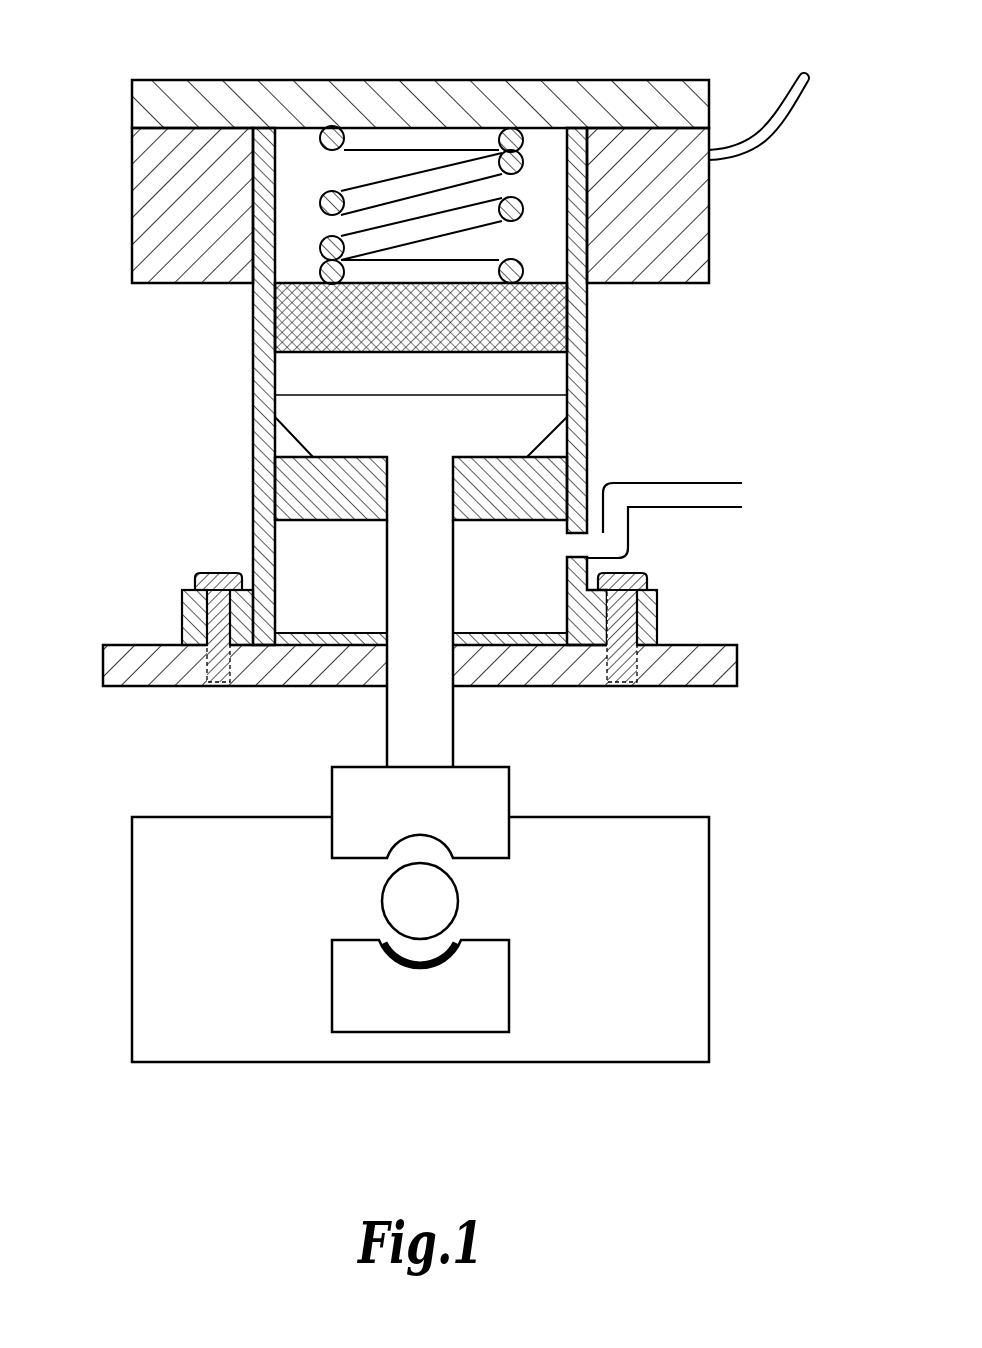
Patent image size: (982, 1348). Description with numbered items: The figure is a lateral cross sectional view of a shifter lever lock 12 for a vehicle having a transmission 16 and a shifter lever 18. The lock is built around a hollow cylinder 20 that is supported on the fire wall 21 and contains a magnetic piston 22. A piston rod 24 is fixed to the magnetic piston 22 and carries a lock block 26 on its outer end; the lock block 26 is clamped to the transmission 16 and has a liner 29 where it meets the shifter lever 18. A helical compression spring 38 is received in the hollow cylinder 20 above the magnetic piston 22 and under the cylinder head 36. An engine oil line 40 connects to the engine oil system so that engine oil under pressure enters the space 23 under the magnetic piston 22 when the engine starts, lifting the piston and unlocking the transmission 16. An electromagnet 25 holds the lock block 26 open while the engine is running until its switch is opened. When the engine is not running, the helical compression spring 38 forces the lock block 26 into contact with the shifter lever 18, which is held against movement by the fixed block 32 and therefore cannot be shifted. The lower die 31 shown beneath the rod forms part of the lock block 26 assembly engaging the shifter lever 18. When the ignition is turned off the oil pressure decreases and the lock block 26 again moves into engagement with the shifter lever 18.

The shifter lever lock 12 is at (732, 573).
The transmission 16 is at (708, 1000).
The shifter lever 18 is at (443, 895).
The hollow cylinder 20 is at (263, 362).
The fire wall 21 is at (132, 645).
The magnetic piston 22 is at (545, 327).
The space 23 is at (484, 594).
The piston rod 24 is at (415, 733).
The electromagnet 25 is at (692, 186).
The lock block 26 is at (352, 795).
The liner 29 is at (407, 960).
The upper die 31 is at (381, 785).
The fixed block 32 is at (480, 997).
The cylinder head 36 is at (255, 80).
The helical compression spring 38 is at (382, 190).
The engine oil line 40 is at (682, 495).